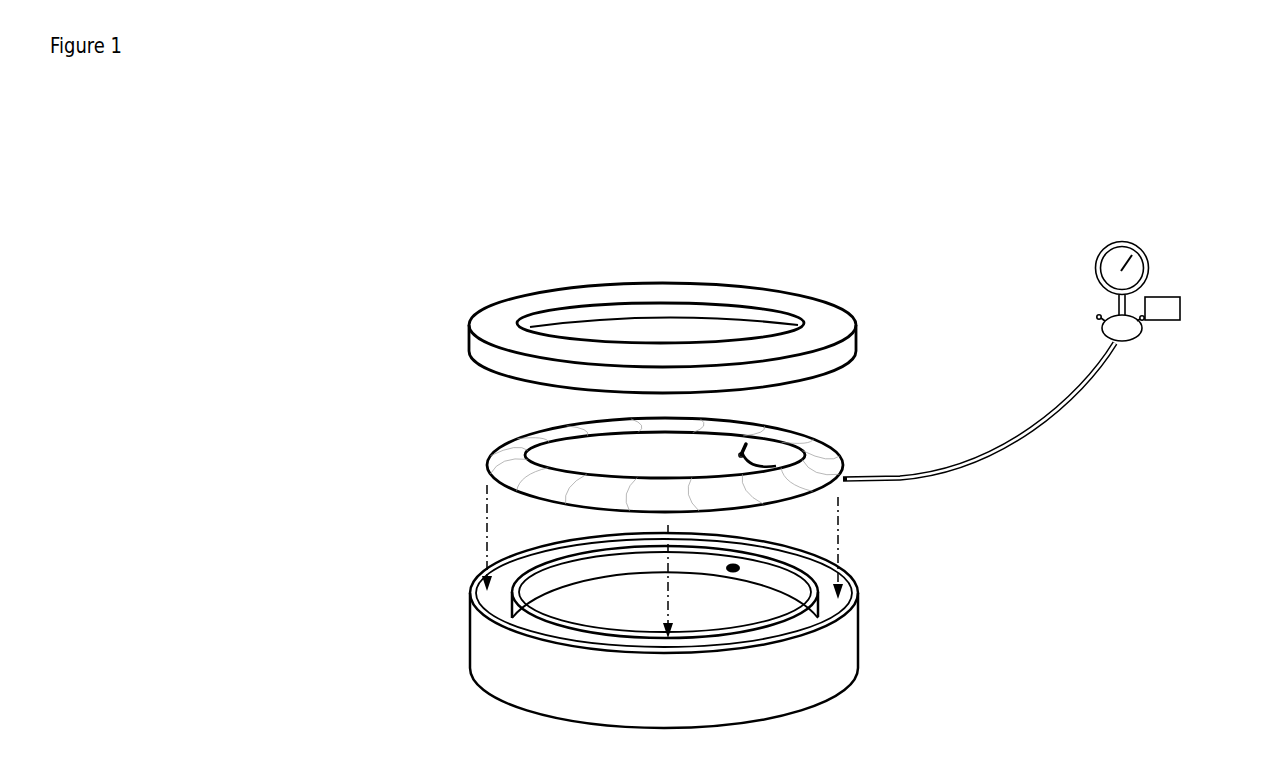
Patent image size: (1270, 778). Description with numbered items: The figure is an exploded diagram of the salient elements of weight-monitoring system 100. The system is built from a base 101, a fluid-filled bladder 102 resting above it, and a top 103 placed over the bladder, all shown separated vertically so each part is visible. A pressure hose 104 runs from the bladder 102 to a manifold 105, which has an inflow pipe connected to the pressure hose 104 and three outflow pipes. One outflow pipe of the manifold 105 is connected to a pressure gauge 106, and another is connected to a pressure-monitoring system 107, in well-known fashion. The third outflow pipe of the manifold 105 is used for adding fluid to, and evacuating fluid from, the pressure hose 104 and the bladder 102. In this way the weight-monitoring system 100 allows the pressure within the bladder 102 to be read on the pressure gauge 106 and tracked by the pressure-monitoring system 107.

The weight-monitoring system 100 is at (845, 154).
The base 101 is at (475, 624).
The fluid-filled bladder 102 is at (498, 450).
The top 103 is at (477, 347).
The pressure hose 104 is at (1020, 442).
The manifold 105 is at (1103, 327).
The pressure gauge 106 is at (1105, 250).
The pressure-monitoring system 107 is at (1179, 297).